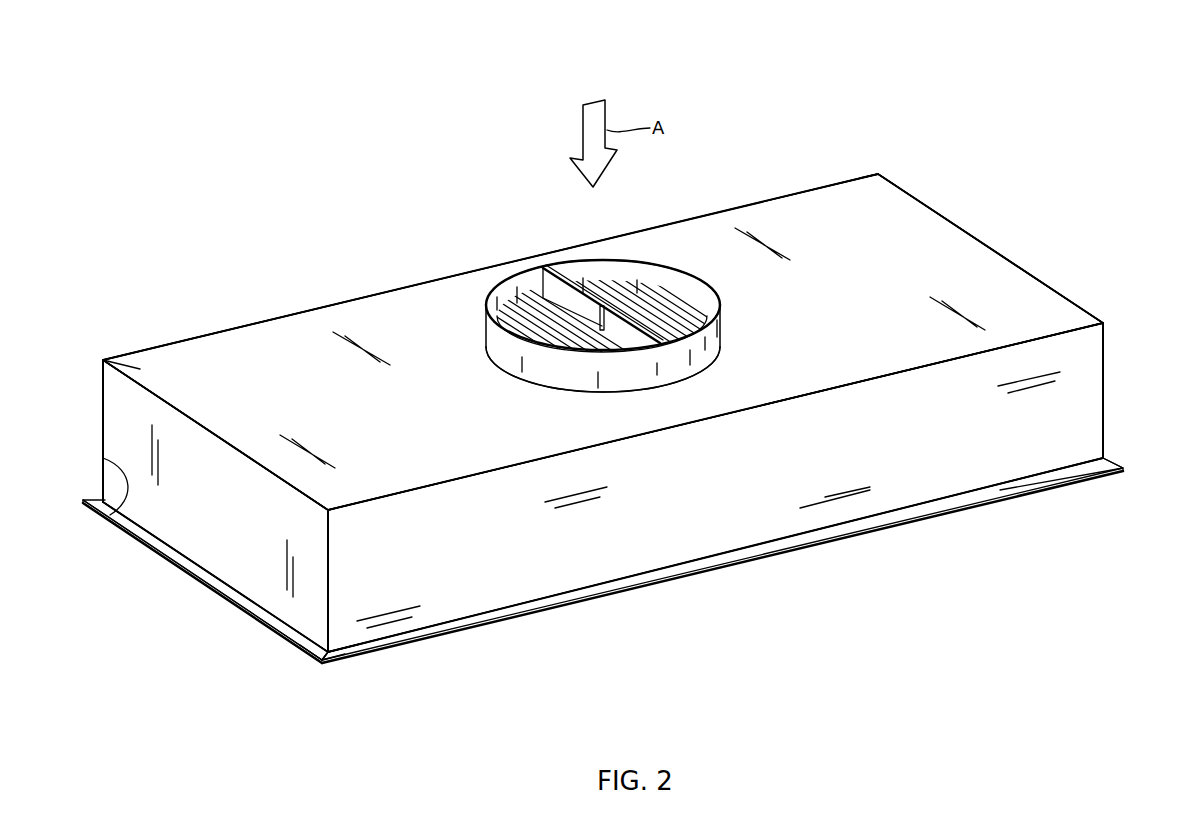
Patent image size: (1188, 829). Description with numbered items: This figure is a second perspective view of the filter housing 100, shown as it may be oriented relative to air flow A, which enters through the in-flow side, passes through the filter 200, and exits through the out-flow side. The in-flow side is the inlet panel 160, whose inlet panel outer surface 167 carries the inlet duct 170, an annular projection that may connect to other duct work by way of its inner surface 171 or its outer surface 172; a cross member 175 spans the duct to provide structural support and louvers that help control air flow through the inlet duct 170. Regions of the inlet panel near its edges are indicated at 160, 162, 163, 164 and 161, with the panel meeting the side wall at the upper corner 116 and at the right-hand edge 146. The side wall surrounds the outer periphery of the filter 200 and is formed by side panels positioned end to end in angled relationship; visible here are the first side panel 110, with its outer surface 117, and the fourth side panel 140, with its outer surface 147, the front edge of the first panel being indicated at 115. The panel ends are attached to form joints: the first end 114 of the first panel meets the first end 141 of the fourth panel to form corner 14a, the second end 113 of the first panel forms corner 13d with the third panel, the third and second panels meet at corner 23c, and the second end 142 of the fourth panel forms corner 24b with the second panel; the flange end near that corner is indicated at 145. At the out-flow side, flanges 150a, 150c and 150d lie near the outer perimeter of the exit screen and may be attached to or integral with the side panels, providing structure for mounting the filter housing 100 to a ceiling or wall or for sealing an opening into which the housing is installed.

The filter housing 100 is at (988, 112).
The corner 23c is at (880, 173).
The inlet panel 160 is at (923, 258).
The rear edge of top panel 162 is at (1023, 268).
The right corner edge 146 is at (1053, 337).
The corner 24b is at (1105, 397).
The second end of fourth panel 142 is at (1090, 440).
The right flange end 145 is at (1002, 483).
The fourth side panel 140 is at (828, 478).
The flange 150a is at (600, 598).
The first end of fourth panel 141 is at (330, 622).
The corner 14a is at (328, 625).
The first end of first panel 114 is at (325, 598).
The left panel front edge 115 is at (260, 572).
The first side panel 110 is at (260, 568).
The flange 150d is at (193, 567).
The second end of first panel 113 is at (112, 523).
The flange 150c is at (103, 497).
The corner 13d is at (103, 423).
The left upper corner 116 is at (112, 370).
The upper left edge 161 is at (222, 435).
The outer surface 117 is at (239, 519).
The top rear left edge 163 is at (447, 278).
The top front edge 164 is at (478, 475).
The inlet panel outer surface 167 is at (849, 296).
The outer surface 147 is at (629, 542).
The filter 200 is at (547, 332).
The cross member 175 is at (560, 292).
The inlet duct 170 is at (648, 283).
The inner surface 171 is at (629, 284).
The outer surface 172 is at (646, 376).